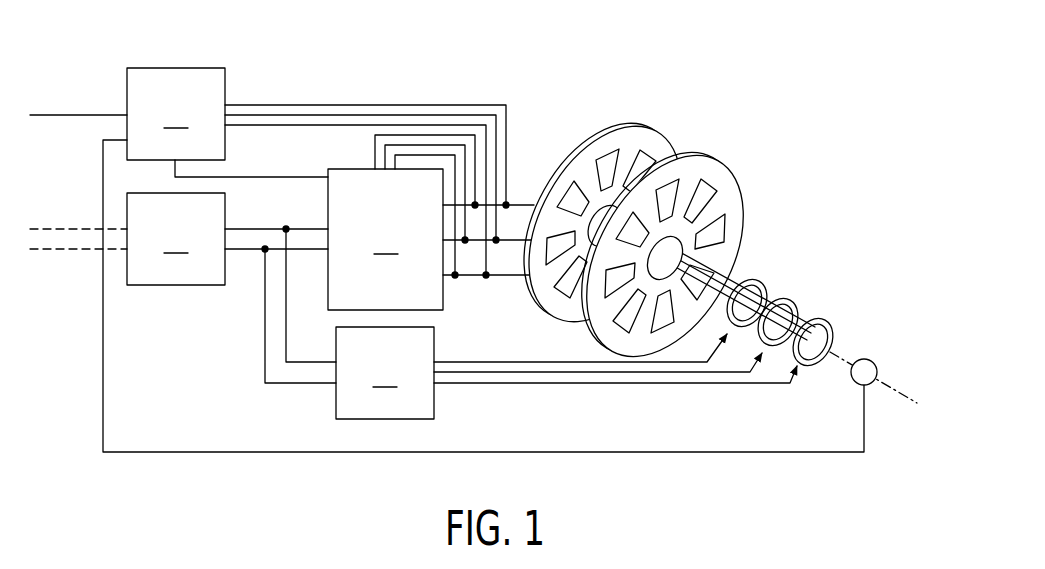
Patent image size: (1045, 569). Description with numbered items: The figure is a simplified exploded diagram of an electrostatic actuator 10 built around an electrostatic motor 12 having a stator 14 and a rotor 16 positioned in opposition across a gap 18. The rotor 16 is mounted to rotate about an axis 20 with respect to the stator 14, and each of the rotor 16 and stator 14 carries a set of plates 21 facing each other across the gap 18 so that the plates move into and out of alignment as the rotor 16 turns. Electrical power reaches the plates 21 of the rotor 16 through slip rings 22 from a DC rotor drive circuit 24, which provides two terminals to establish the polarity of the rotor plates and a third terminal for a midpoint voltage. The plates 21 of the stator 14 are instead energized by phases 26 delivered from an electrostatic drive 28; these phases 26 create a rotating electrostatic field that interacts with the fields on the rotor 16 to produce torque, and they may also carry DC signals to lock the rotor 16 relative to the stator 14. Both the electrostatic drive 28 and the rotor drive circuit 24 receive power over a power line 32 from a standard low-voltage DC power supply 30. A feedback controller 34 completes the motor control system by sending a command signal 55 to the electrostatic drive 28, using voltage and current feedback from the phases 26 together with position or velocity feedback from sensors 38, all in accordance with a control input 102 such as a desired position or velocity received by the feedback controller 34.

The electrostatic actuator 10 is at (871, 131).
The electrostatic motor 12 is at (665, 110).
The stator 14 is at (627, 126).
The rotor 16 is at (740, 194).
The gap 18 is at (578, 334).
The axis 20 is at (885, 383).
The plates 21 is at (622, 162).
The slip rings 22 is at (816, 321).
The DC rotor drive circuit 24 is at (385, 373).
The phases 26 is at (517, 247).
The electrostatic drive 28 is at (385, 239).
The low-voltage DC power supply 30 is at (176, 239).
The power line 32 is at (247, 232).
The feedback controller 34 is at (176, 114).
The sensors 38 is at (868, 385).
The command signal 55 is at (237, 177).
The control input 102 is at (80, 115).